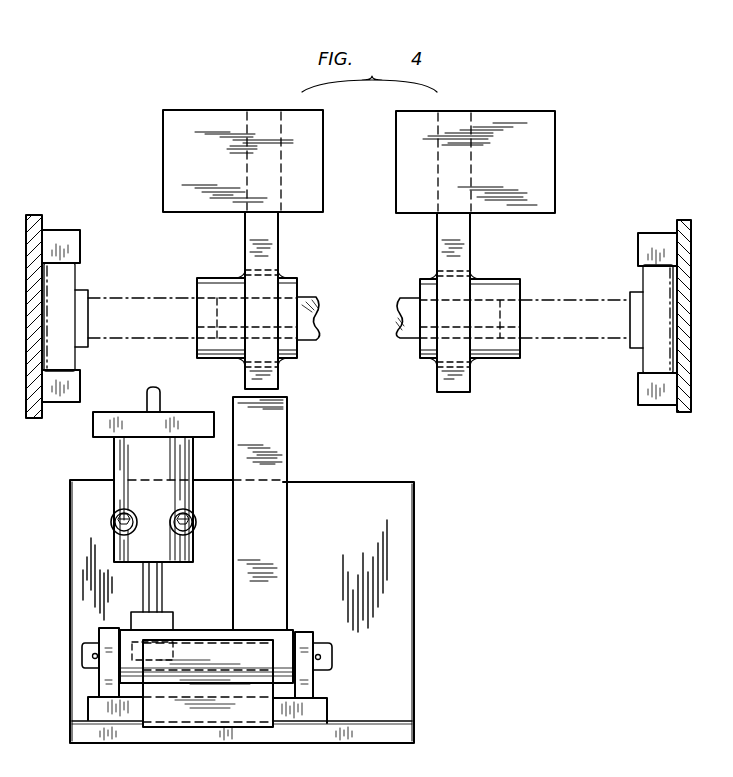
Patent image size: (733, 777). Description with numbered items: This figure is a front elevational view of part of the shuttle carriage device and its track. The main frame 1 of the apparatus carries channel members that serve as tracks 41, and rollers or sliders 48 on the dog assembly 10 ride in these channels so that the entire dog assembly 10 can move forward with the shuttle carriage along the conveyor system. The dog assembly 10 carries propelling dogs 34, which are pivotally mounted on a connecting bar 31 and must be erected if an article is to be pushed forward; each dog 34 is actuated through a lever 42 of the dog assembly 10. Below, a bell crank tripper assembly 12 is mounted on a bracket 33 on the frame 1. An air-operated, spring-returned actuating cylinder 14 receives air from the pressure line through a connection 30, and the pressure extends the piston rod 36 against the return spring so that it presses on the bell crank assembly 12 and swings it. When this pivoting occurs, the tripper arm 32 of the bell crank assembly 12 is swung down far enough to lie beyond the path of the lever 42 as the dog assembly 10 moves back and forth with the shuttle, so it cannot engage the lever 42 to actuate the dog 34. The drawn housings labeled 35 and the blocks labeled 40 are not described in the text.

The main frame 1 is at (26, 290).
The dog assembly 10 is at (593, 217).
The bell crank tripper assembly 12 is at (320, 472).
The actuating cylinder 14 is at (143, 405).
The connection 30 is at (162, 397).
The connecting bar 31 is at (153, 312).
The tripper arm 32 is at (287, 445).
The bracket 33 is at (414, 692).
The propelling dog 34 is at (278, 241).
The drive housing 35 is at (166, 160).
The piston rod 36 is at (162, 582).
The standoff block 40 is at (334, 662).
The tracks 41 is at (57, 246).
The lever 42 is at (278, 374).
The rollers or sliders 48 is at (65, 283).